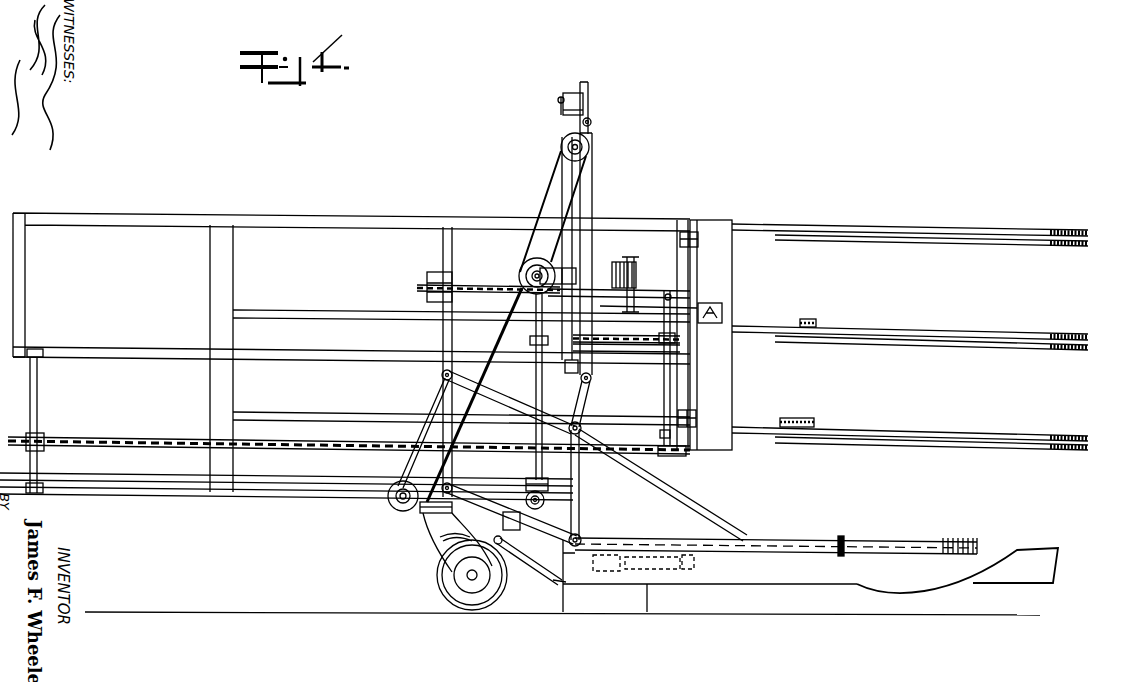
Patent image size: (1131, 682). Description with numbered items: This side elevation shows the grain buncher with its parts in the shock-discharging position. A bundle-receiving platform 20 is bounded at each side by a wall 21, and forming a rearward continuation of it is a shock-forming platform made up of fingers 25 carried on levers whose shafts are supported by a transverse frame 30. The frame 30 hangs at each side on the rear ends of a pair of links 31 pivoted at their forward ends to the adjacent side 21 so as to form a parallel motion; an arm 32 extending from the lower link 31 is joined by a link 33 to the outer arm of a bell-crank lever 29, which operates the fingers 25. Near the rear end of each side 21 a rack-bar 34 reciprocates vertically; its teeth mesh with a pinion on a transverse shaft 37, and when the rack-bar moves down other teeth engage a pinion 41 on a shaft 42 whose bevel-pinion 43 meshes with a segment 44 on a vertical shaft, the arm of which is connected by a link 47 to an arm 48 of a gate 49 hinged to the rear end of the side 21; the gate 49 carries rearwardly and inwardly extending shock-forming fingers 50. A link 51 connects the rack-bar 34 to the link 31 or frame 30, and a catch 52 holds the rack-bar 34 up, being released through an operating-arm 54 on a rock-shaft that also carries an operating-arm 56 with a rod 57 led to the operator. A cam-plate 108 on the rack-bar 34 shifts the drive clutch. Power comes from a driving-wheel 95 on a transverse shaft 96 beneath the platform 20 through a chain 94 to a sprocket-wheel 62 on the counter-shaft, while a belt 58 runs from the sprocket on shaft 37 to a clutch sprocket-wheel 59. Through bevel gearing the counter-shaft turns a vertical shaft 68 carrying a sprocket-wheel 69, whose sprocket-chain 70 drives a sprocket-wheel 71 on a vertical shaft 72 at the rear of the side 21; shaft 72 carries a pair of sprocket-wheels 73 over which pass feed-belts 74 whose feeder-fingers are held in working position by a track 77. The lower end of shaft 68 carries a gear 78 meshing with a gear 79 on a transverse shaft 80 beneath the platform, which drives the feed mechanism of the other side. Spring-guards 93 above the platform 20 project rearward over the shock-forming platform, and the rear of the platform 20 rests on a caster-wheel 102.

The bundle-receiving platform 20 is at (124, 485).
The side wall 21 is at (380, 226).
The shock-forming finger 25 is at (1025, 563).
The bell-crank lever 29 is at (706, 589).
The transverse frame 30 is at (647, 613).
The link 31 is at (527, 404).
The arm 32 is at (442, 538).
The link 33 is at (538, 569).
The rack-bar 34 is at (583, 253).
The transverse shaft 37 is at (561, 146).
The pinion 41 is at (540, 253).
The shaft 42 is at (614, 292).
The bevel-pinion 43 is at (618, 262).
The pinion or segment 44 is at (636, 266).
The link 47 is at (668, 296).
The arm 48 is at (708, 322).
The gate 49 is at (722, 266).
The shock-forming fingers 50 is at (1002, 345).
The link 51 is at (587, 441).
The catch 52 is at (591, 122).
The operating-arm 54 is at (590, 100).
The operating-arm 56 is at (563, 106).
The link or rod 57 is at (560, 96).
The belt 58 is at (551, 176).
The sprocket-wheel 59 is at (519, 270).
The sprocket-wheel 62 is at (534, 291).
The vertical shaft 68 is at (542, 390).
The sprocket-wheel 69 is at (529, 340).
The sprocket-chain 70 is at (643, 353).
The sprocket-wheel 71 is at (676, 340).
The vertical shaft 72 is at (664, 396).
The sprocket-wheels 73 is at (700, 296).
The feed-belt 74 is at (487, 290).
The track 77 is at (349, 432).
The gear 78 is at (528, 496).
The gear 79 is at (543, 503).
The shaft 80 is at (542, 483).
The spring-guards 93 is at (356, 318).
The belt or chain 94 is at (437, 398).
The driving-wheel 95 is at (395, 501).
The transverse shaft 96 is at (400, 507).
The caster-wheel 102 is at (447, 578).
The cam-plate 108 is at (508, 400).